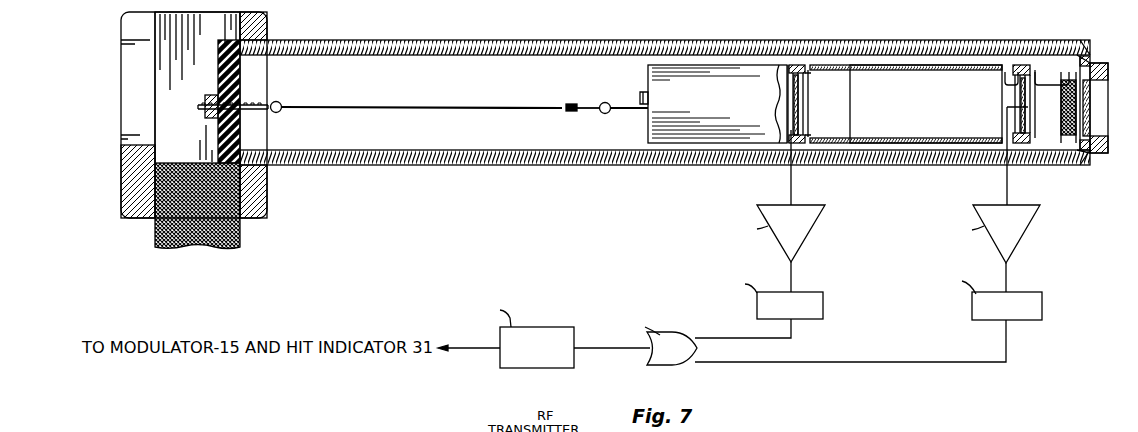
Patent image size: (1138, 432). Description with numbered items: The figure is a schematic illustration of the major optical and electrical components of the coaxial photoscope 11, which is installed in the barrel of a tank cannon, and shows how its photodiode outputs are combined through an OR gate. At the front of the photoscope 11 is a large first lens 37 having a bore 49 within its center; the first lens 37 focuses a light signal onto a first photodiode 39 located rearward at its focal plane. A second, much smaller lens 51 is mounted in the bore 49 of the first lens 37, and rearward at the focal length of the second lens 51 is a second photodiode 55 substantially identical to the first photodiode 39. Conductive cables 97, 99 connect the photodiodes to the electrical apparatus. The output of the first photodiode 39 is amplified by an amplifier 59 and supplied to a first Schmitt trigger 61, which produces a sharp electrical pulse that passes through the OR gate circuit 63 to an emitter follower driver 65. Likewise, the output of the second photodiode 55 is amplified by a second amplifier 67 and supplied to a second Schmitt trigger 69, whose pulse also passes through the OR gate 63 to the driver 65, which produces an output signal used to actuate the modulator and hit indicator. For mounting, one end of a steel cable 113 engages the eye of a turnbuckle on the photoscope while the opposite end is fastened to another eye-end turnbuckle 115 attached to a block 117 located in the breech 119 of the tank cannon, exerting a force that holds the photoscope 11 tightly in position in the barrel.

The coaxial photoscope 11 is at (709, 147).
The first lens 37 is at (1090, 92).
The first photodiode 39 is at (798, 105).
The bore 49 is at (1090, 124).
The second lens 51 is at (1078, 114).
The second photodiode 55 is at (1028, 107).
The amplifier 59 is at (808, 238).
The first Schmitt trigger 61 is at (823, 300).
The OR gate circuit 63 is at (668, 332).
The emitter follower driver 65 is at (535, 327).
The second amplifier 67 is at (1024, 238).
The second Schmitt trigger 69 is at (1042, 300).
The conductive cable 97 is at (1007, 186).
The conductive cable 99 is at (791, 186).
The steel cable 113 is at (415, 109).
The eye-end turnbuckle 115 is at (275, 112).
The block 117 is at (240, 236).
The breech 119 is at (125, 203).